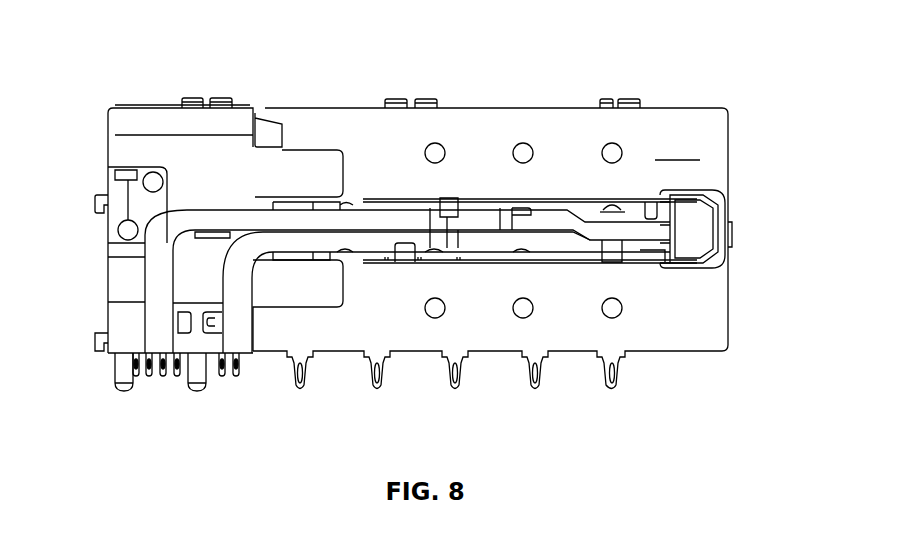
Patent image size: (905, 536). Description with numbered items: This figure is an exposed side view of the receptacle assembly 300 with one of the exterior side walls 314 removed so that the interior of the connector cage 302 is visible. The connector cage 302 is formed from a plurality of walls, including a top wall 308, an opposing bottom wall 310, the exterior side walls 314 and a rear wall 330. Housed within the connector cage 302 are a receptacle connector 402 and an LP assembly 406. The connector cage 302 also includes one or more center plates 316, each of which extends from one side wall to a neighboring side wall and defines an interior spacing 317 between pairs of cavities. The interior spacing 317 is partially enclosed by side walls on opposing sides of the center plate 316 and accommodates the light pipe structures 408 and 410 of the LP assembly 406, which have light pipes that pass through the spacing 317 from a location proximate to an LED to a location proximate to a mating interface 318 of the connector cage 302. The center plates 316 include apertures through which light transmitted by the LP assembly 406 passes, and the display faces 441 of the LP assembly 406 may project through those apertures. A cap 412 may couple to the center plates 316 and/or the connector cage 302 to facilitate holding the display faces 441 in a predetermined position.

The receptacle assembly 300 is at (421, 236).
The connector cage 302 is at (314, 98).
The top wall 308 is at (490, 225).
The bottom wall 310 is at (491, 368).
The exterior side walls 314 is at (677, 148).
The center plates 316 is at (542, 200).
The interior spacing 317 is at (636, 208).
The mating interface 318 is at (742, 258).
The rear wall 330 is at (108, 162).
The receptacle connector 402 is at (197, 175).
The LP assembly 406 is at (358, 192).
The LP structure 408 is at (480, 222).
The LP structure 410 is at (490, 238).
The cap 412 is at (693, 240).
The display faces 441 is at (742, 229).